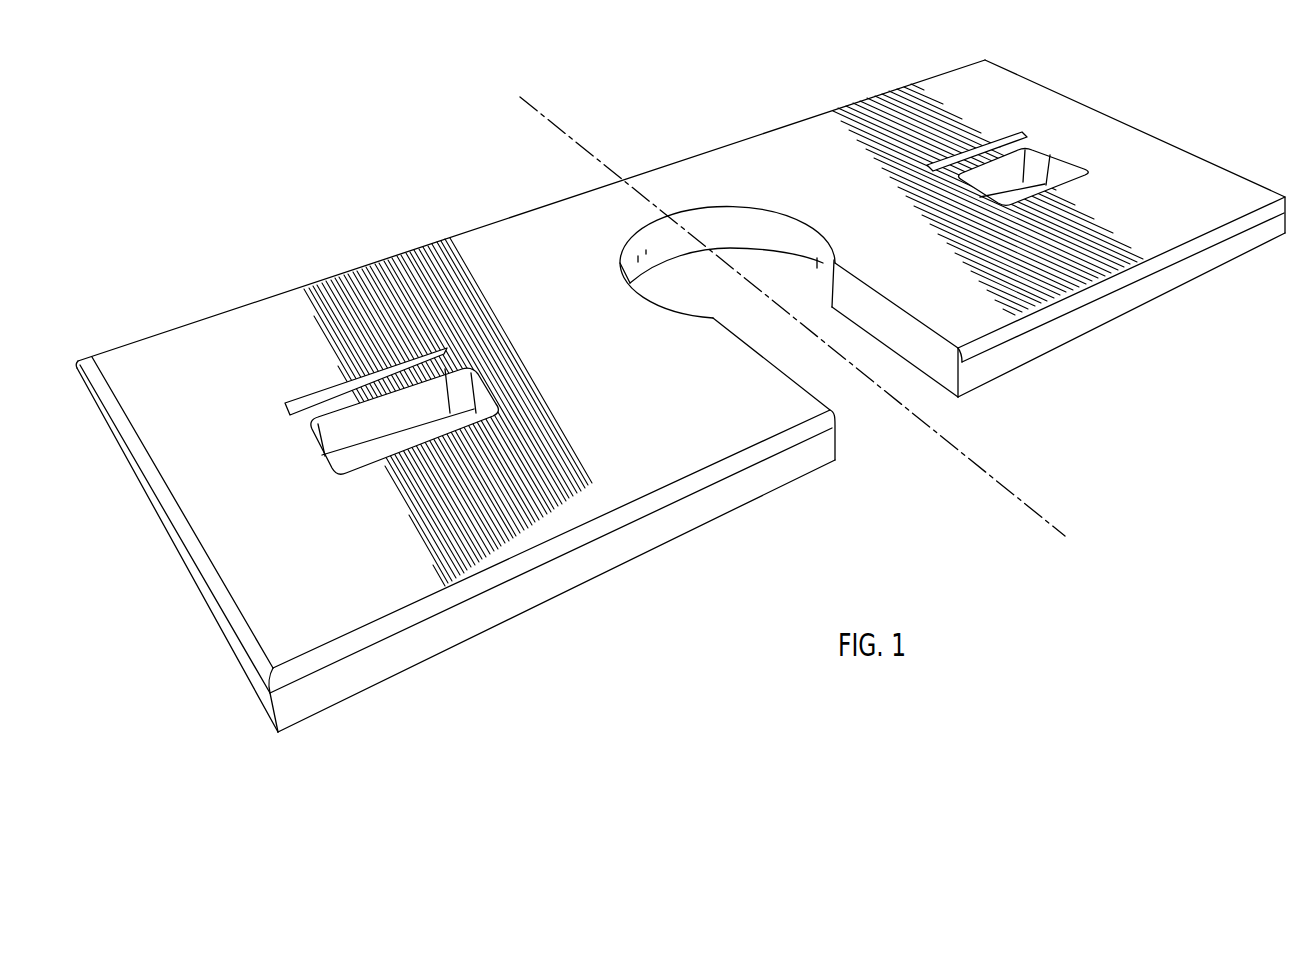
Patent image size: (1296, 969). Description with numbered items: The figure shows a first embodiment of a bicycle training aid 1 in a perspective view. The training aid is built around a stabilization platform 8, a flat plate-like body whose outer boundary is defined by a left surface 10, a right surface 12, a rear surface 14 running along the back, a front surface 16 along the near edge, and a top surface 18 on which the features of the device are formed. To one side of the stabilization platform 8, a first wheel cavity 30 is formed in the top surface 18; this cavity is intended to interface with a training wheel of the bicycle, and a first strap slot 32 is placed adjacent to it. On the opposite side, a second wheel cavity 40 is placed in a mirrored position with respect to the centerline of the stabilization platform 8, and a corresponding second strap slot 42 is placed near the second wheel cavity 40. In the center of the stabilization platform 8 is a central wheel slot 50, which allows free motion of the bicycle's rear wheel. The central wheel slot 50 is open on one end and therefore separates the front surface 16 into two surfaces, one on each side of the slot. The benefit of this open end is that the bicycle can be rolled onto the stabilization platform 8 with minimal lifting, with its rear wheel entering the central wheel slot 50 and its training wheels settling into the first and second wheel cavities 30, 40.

The bicycle training aid 1 is at (601, 133).
The stabilization platform 8 is at (730, 143).
The left surface 10 is at (198, 583).
The right surface 12 is at (1149, 131).
The rear surface 14 is at (415, 245).
The front surface 16 is at (650, 537).
The top surface 18 is at (634, 451).
The first wheel cavity 30 is at (423, 407).
The first strap slot 32 is at (403, 358).
The second wheel cavity 40 is at (1013, 181).
The second strap slot 42 is at (978, 148).
The central wheel slot 50 is at (859, 312).